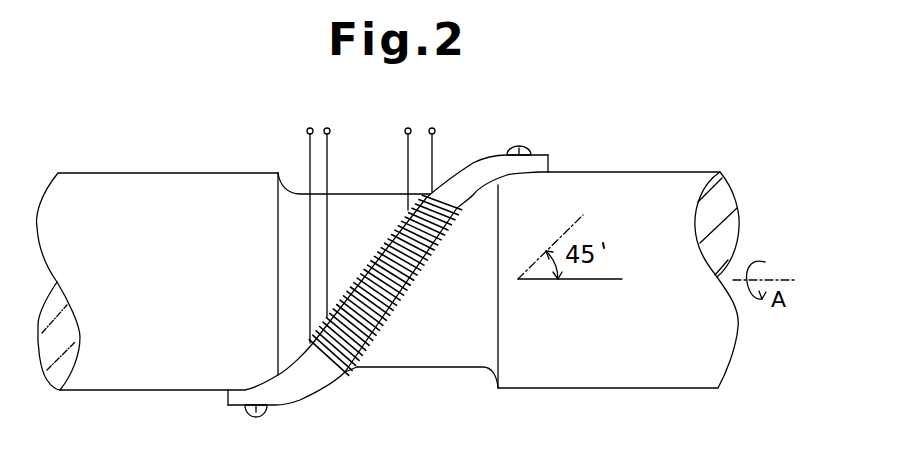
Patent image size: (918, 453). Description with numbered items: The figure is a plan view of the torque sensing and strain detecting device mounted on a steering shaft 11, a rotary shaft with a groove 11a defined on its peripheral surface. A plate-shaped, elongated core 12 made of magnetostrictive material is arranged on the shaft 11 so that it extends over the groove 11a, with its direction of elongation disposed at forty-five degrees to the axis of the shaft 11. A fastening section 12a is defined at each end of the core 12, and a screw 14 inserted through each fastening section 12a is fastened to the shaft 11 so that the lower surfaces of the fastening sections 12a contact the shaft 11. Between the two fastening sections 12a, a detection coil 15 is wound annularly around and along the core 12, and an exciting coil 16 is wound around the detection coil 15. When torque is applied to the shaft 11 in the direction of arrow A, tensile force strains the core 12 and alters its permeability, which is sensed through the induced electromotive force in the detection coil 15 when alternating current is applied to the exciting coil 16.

The steering shaft 11 is at (725, 348).
The groove 11a is at (408, 368).
The core 12 is at (455, 178).
The fastening section 12a is at (540, 145).
The screw 14 is at (513, 150).
The detection coil 15 is at (358, 369).
The exciting coil 16 is at (407, 303).